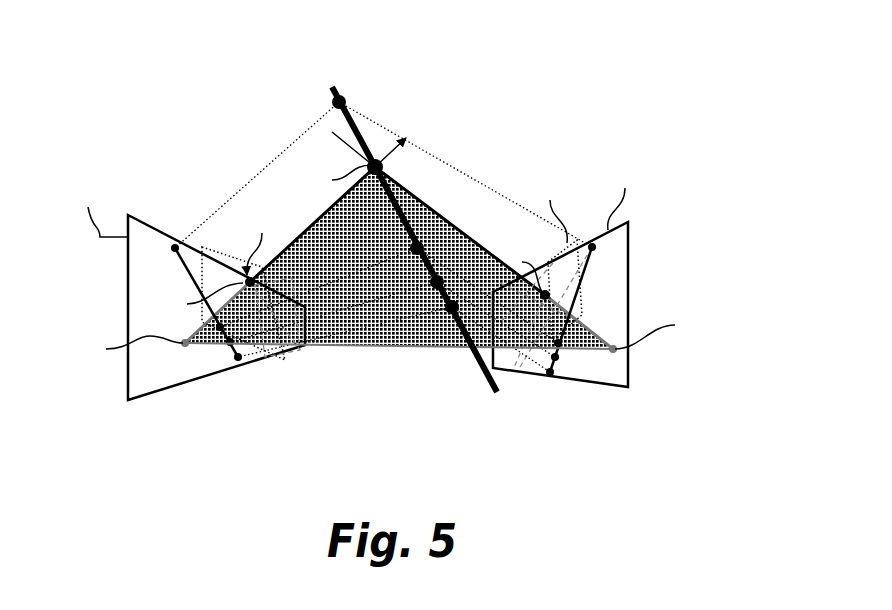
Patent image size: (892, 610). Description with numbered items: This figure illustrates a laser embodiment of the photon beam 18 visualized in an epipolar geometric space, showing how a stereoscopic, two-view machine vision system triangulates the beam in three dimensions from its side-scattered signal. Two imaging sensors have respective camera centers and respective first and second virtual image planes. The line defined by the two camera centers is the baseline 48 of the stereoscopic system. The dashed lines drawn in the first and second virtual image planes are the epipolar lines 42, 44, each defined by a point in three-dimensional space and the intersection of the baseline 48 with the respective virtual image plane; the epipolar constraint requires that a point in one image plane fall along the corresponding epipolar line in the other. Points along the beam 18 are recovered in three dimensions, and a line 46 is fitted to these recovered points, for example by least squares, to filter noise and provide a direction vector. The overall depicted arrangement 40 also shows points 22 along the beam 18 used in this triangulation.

The stereo imaging geometry 40 is at (120, 80).
The line 46 is at (177, 260).
The epipolar line 44 is at (552, 277).
The epipolar line 42 is at (258, 297).
The baseline 48 is at (390, 347).
The photon beam 18 is at (495, 395).
The points on line 22 is at (345, 98).